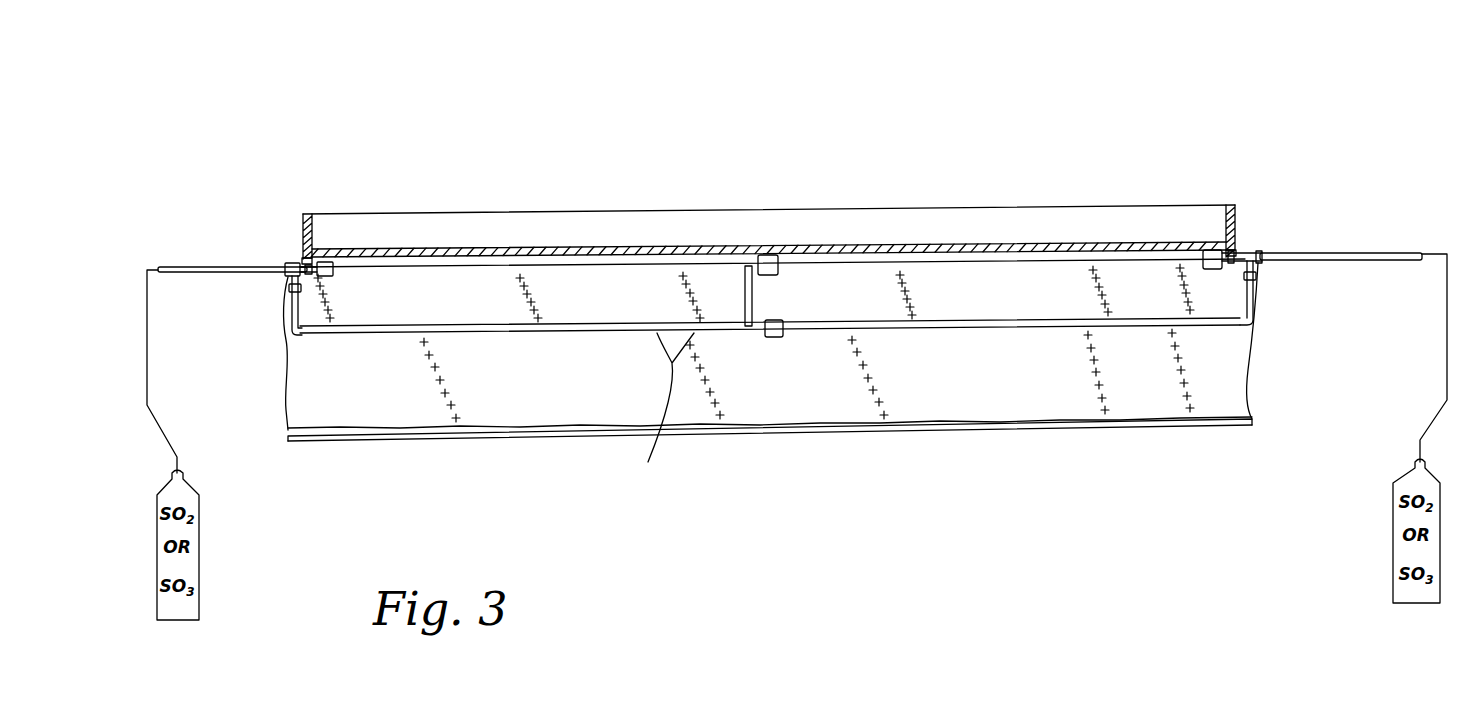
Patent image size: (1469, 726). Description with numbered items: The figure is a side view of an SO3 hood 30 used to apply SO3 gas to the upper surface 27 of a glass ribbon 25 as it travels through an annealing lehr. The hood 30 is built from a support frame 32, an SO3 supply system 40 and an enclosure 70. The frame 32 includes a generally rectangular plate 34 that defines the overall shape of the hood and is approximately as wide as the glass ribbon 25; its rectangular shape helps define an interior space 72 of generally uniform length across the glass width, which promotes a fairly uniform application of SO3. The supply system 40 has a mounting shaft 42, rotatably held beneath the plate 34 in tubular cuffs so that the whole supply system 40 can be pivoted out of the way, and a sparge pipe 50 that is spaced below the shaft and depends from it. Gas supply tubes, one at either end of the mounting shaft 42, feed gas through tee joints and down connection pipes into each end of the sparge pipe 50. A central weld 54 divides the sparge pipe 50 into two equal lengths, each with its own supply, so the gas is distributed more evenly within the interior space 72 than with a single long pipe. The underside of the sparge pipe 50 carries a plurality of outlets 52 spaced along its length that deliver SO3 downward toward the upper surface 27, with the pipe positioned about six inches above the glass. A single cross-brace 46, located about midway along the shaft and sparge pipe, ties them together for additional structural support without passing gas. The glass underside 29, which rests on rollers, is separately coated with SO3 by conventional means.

The glass ribbon 25 is at (1254, 427).
The upper surface of the glass 27 is at (1238, 420).
The underside of the glass 29 is at (1250, 433).
The SO3 hood 30 is at (1312, 128).
The support frame 32 is at (860, 210).
The plate 34 is at (978, 247).
The SO3 supply system 40 is at (1358, 248).
The mounting shaft 42 is at (455, 265).
The cross-brace 46 is at (752, 296).
The sparge pipe 50 is at (508, 328).
The outlets 52 is at (661, 412).
The central weld 54 is at (778, 340).
The enclosure 70 is at (285, 392).
The interior space 72 is at (1237, 343).